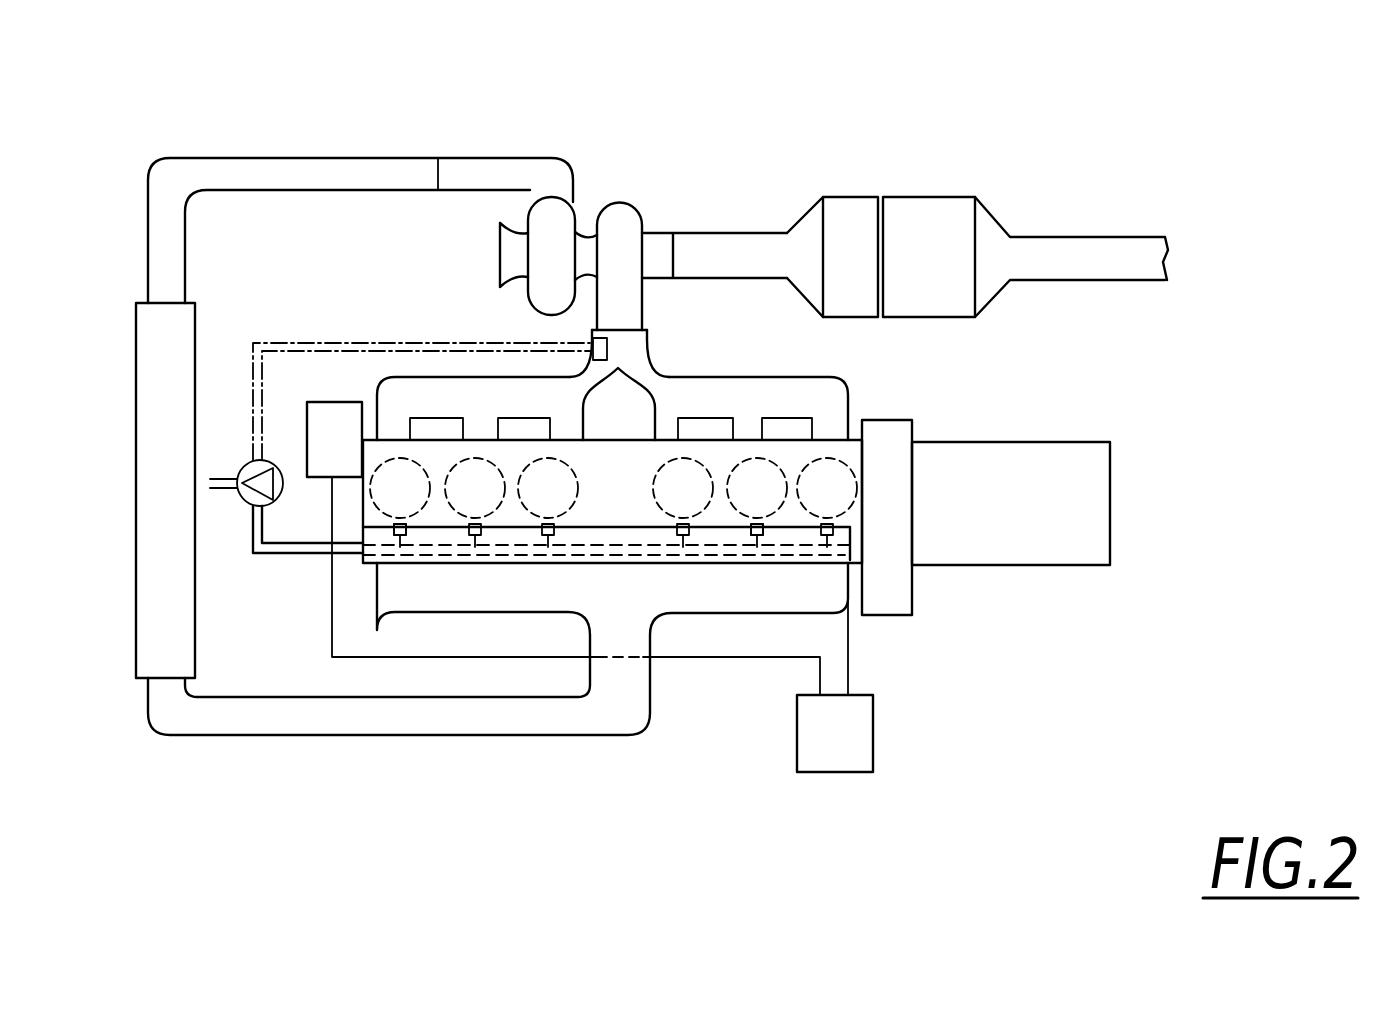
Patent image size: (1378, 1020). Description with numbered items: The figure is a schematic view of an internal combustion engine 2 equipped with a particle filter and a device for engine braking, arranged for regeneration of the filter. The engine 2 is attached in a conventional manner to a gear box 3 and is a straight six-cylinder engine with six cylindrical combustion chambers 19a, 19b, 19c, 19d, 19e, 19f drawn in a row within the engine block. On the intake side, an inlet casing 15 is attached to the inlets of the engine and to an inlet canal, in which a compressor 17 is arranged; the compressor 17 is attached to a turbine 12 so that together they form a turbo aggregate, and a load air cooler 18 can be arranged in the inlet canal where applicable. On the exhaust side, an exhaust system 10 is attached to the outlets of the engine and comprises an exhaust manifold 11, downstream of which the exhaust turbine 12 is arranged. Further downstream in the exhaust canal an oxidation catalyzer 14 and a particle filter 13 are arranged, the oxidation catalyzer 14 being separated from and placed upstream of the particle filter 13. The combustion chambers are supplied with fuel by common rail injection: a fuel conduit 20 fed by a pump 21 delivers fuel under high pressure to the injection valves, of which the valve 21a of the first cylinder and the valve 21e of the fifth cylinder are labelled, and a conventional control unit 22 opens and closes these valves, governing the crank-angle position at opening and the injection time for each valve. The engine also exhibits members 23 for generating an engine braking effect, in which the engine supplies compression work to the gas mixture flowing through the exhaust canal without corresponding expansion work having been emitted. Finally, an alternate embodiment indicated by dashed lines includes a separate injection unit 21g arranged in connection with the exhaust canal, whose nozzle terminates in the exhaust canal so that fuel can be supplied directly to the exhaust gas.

The exhaust system 10 is at (1003, 132).
The internal combustion engine 2 is at (630, 501).
The gear box 3 is at (1026, 530).
The exhaust manifold 11 is at (823, 397).
The exhaust turbine 12 is at (628, 213).
The particle filter 13 is at (943, 222).
The oxidation catalyzer 14 is at (845, 222).
The inlet casing 15 is at (612, 602).
The compressor 17 is at (553, 232).
The load air cooler 18 is at (178, 456).
The combustion chamber 19a is at (402, 502).
The combustion chamber 19b is at (477, 502).
The combustion chamber 19c is at (550, 502).
The combustion chamber 19d is at (685, 502).
The combustion chamber 19e is at (759, 502).
The combustion chamber 19f is at (829, 502).
The fuel conduit 20 is at (277, 551).
The pump 21 is at (245, 503).
The valve 21a is at (395, 528).
The valve 21e is at (762, 532).
The injection unit 21g is at (608, 352).
The control unit 22 is at (850, 756).
The members for generating an engine braking effect 23 is at (350, 456).